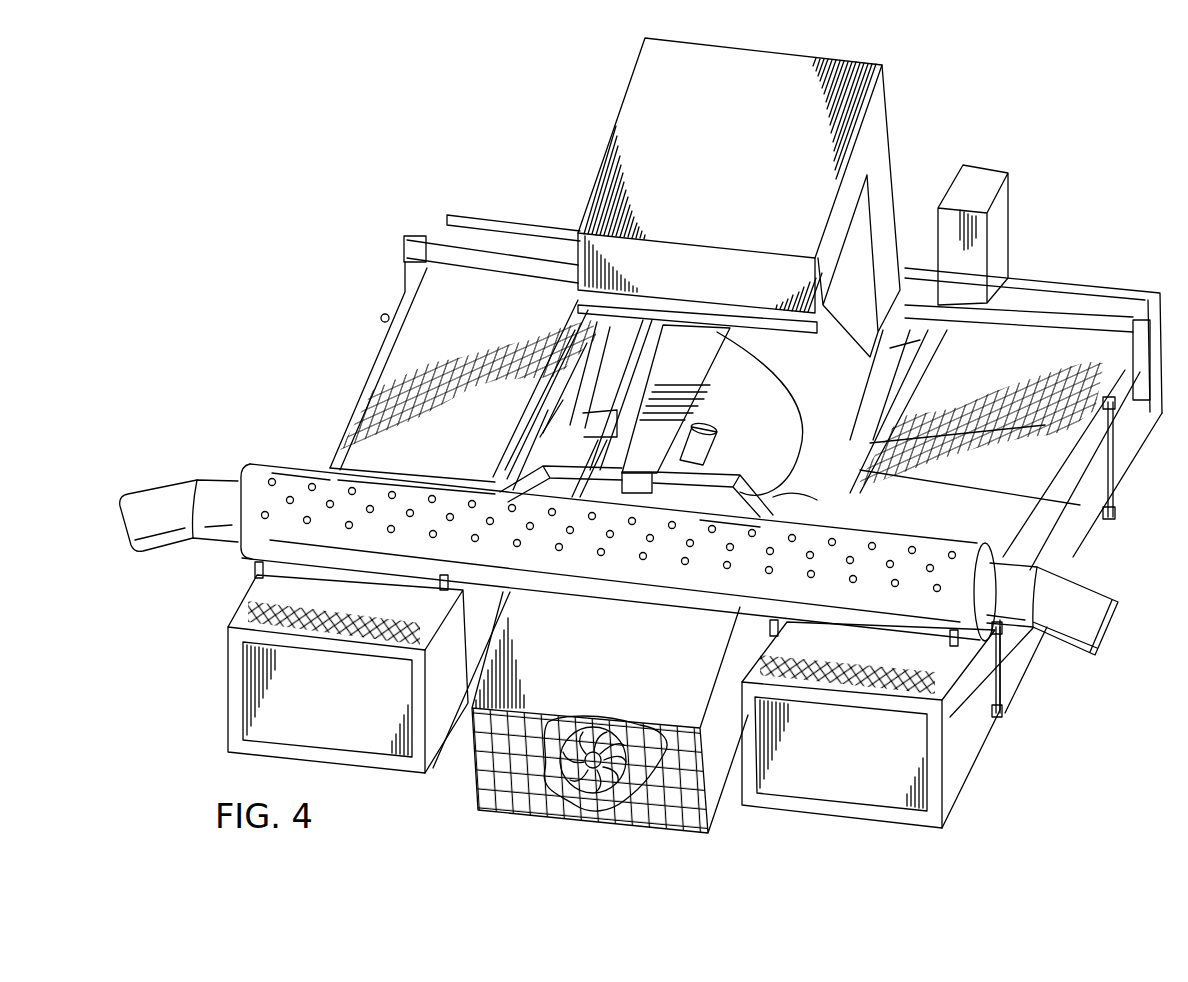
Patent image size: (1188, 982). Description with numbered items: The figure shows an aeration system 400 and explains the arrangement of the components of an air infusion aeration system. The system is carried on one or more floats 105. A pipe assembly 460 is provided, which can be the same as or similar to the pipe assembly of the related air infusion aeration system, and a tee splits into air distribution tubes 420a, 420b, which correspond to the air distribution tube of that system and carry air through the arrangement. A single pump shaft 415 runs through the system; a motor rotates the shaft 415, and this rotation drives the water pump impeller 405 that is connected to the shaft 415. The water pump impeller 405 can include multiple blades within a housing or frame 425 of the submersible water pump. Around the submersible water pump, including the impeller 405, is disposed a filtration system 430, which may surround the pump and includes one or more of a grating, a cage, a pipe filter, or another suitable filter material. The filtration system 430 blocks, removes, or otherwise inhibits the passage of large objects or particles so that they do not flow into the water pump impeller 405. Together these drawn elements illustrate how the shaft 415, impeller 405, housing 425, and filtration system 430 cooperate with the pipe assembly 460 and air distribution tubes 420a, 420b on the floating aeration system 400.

The aeration system 400 is at (391, 98).
The pipe assembly 460 is at (690, 348).
The air distribution tube 420a is at (563, 455).
The air distribution tube 420b is at (800, 497).
The single pump shaft 415 is at (712, 470).
The housing or frame of the water pump 425 is at (597, 630).
The filtration system 430 is at (458, 797).
The water pump impeller 405 is at (648, 727).
The float 105 is at (258, 723).